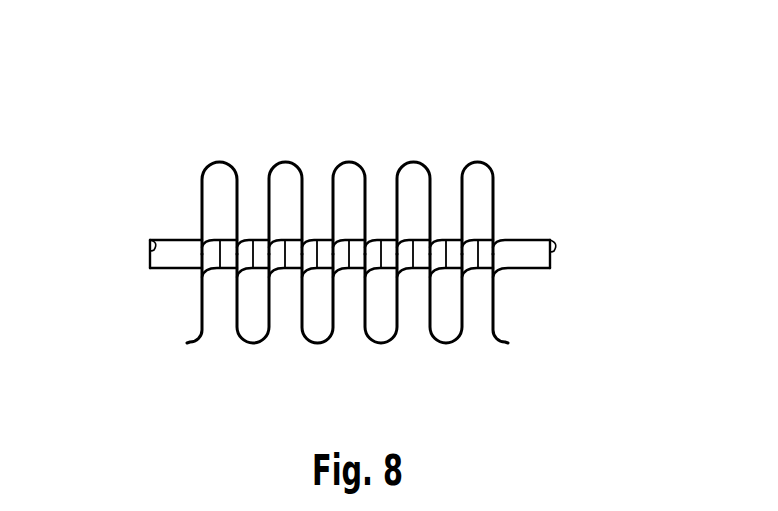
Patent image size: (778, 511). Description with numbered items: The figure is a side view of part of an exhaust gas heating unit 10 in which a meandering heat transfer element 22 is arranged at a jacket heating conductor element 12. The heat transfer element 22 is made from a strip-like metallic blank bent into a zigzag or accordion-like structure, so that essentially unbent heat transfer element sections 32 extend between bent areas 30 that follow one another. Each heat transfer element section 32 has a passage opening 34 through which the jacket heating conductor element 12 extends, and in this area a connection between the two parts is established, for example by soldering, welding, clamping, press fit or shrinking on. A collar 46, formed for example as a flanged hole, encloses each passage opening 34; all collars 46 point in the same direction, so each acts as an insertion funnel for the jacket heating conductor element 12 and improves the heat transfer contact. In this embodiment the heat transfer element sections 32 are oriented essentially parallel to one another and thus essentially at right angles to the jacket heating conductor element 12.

The exhaust gas heating unit 10 is at (553, 160).
The jacket heating conductor element 12 is at (533, 268).
The heat transfer element 22 is at (364, 269).
The bent area 30 is at (316, 346).
The heat transfer element section 32 is at (235, 315).
The passage opening 34 is at (183, 292).
The collar 46 is at (498, 268).